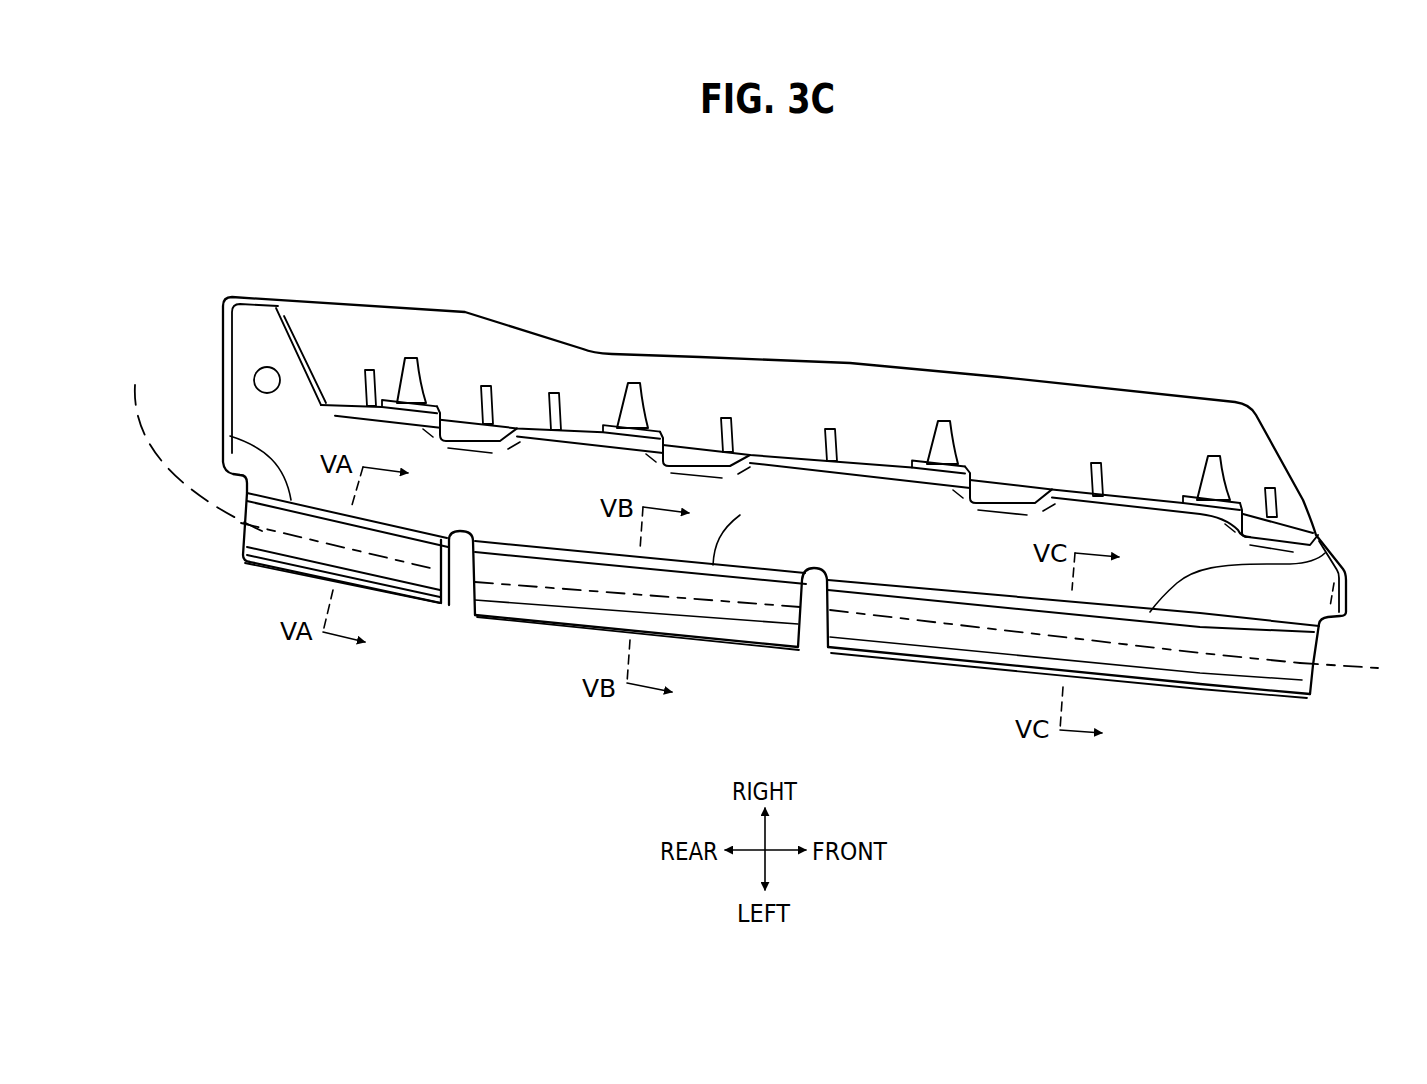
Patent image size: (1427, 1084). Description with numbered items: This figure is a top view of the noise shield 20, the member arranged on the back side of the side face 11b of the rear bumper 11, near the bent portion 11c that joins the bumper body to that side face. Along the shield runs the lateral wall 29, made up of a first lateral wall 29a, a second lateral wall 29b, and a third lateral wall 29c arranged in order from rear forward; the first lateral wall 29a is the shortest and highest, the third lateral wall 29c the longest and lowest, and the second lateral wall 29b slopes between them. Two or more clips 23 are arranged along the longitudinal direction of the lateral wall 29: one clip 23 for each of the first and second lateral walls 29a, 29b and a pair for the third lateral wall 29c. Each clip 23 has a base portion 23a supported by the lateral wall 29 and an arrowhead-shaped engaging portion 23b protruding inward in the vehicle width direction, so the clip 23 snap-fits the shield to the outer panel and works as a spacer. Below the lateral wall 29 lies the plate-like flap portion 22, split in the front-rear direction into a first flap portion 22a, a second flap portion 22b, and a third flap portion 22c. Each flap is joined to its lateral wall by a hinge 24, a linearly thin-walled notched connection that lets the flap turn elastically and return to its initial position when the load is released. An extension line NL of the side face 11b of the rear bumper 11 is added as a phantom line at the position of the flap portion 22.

The noise shield 20 is at (1262, 305).
The lateral wall 29 is at (733, 378).
The first lateral wall 29a is at (300, 437).
The second lateral wall 29b is at (563, 467).
The third lateral wall 29c is at (1018, 530).
The clip 23 is at (870, 381).
The base portion 23a is at (428, 400).
The engaging portion 23b is at (413, 368).
The hinge 24 is at (230, 436).
The flap portion 22 is at (791, 633).
The first flap portion 22a is at (449, 585).
The second flap portion 22b is at (800, 618).
The third flap portion 22c is at (1300, 672).
The rear bumper 11 is at (776, 656).
The side face 11b is at (920, 620).
The bent portion 11c is at (195, 532).
The extension line NL is at (1338, 665).